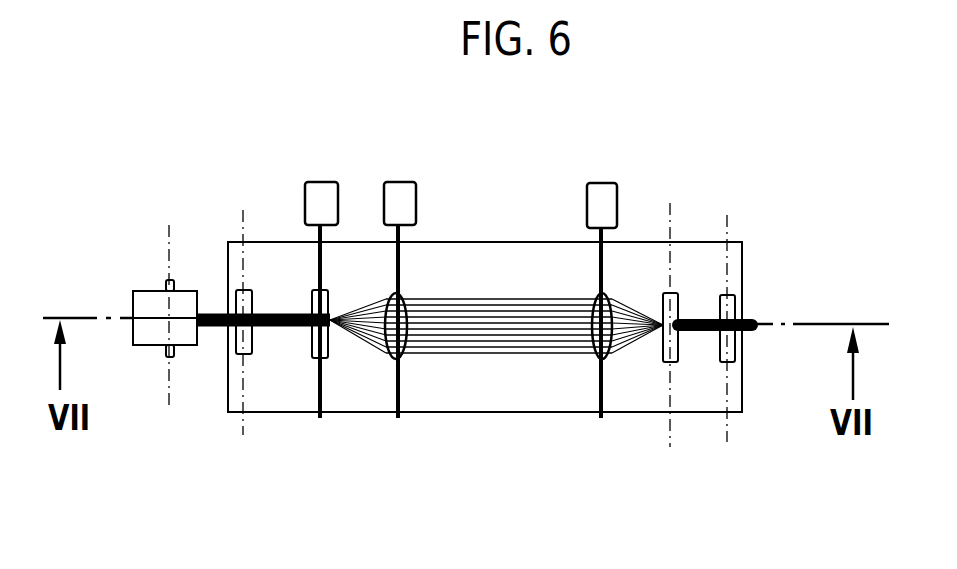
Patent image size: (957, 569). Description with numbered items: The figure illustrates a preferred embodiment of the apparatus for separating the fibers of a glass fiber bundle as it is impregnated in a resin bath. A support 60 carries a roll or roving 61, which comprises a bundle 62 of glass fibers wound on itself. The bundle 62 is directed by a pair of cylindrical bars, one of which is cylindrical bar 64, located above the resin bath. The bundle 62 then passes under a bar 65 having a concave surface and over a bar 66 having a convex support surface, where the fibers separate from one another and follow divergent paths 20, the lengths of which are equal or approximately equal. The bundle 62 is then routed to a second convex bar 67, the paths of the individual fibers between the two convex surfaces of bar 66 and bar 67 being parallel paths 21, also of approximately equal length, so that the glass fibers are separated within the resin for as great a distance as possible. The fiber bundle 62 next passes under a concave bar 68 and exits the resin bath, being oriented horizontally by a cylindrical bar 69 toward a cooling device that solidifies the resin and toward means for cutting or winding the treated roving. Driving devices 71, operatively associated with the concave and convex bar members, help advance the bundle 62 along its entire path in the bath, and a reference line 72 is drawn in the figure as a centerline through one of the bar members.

The divergent paths 20 is at (356, 274).
The parallel or convergent paths 21 is at (498, 277).
The support 60 is at (168, 280).
The roving 61 is at (145, 342).
The bundle 62 is at (215, 312).
The cylindrical bar 64 is at (240, 343).
The bar 65 is at (315, 347).
The bar 66 is at (391, 358).
The second convex bar 67 is at (596, 294).
The concave bar 68 is at (675, 348).
The cylindrical bar 69 is at (729, 300).
The driving devices 71 is at (400, 187).
The optical axis line 72 is at (670, 218).